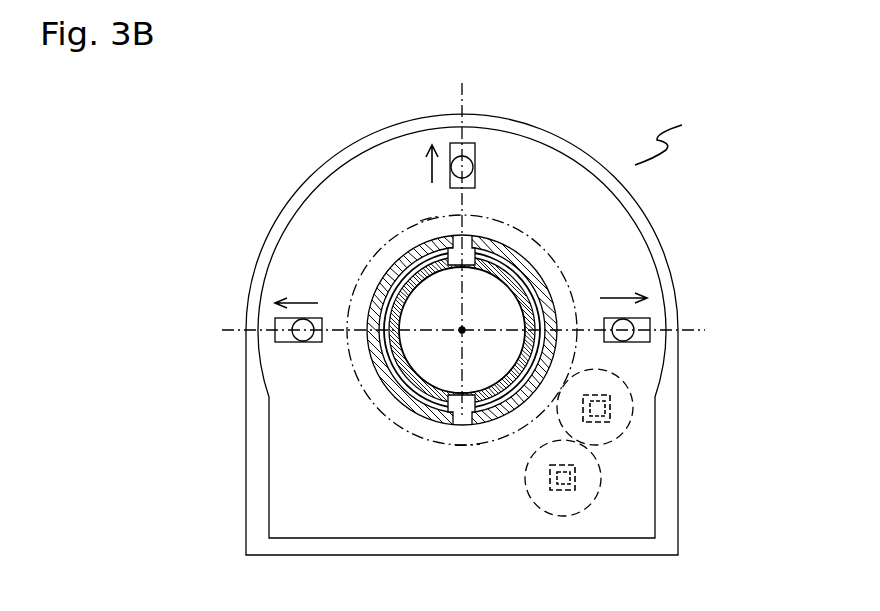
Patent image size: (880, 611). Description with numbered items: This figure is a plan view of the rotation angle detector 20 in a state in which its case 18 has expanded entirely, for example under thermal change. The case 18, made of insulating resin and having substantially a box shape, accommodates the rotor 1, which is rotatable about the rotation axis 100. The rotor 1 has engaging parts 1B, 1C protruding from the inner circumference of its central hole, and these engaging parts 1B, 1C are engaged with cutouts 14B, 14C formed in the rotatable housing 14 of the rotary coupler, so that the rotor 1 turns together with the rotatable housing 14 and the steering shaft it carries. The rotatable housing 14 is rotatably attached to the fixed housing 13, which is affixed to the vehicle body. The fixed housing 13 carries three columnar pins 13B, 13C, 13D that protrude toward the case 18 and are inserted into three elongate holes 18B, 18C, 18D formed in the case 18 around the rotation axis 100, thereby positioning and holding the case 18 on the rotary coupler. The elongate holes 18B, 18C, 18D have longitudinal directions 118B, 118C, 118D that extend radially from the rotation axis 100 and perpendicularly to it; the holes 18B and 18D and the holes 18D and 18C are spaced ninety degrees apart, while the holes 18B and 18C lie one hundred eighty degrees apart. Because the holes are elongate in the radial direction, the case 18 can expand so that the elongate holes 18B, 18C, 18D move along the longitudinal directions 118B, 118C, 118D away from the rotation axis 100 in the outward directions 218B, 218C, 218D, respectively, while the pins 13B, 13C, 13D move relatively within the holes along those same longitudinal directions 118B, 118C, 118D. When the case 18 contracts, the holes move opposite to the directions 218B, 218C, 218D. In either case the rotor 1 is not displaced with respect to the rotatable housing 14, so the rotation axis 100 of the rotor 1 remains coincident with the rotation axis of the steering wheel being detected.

The rotor 1 is at (363, 388).
The engaging part 1B is at (430, 218).
The engaging part 1C is at (467, 407).
The fixed housing 13 is at (272, 222).
The pin 13B is at (275, 342).
The pin 13C is at (648, 342).
The pin 13D is at (452, 158).
The rotatable housing 14 is at (542, 283).
The cutout 14B is at (471, 235).
The cutout 14C is at (452, 402).
The case 18 is at (322, 182).
The elongate hole 18B is at (275, 319).
The elongate hole 18C is at (650, 320).
The elongate hole 18D is at (463, 142).
The rotation angle detector 20 is at (671, 132).
The rotation axis 100 is at (462, 330).
The longitudinal direction 118B is at (247, 331).
The longitudinal direction 118C is at (612, 342).
The longitudinal direction 118D is at (460, 97).
The outward direction 218B is at (287, 300).
The outward direction 218C is at (640, 290).
The outward direction 218D is at (430, 170).